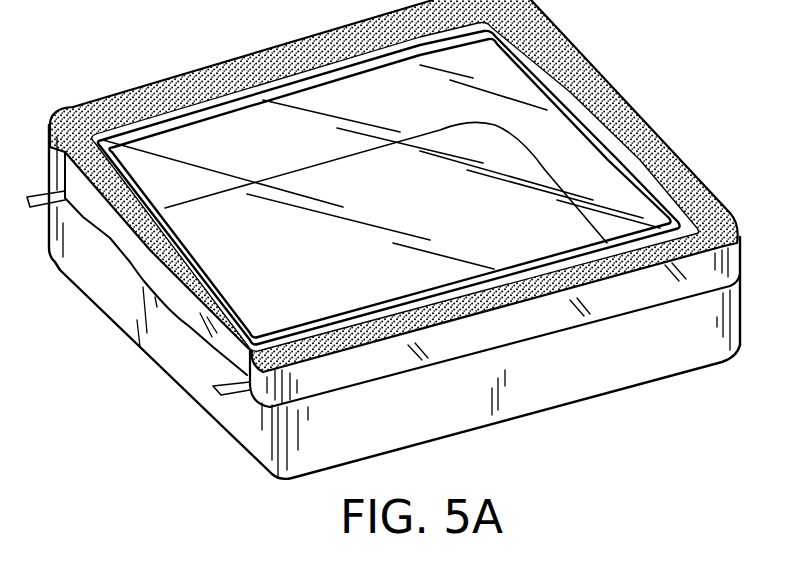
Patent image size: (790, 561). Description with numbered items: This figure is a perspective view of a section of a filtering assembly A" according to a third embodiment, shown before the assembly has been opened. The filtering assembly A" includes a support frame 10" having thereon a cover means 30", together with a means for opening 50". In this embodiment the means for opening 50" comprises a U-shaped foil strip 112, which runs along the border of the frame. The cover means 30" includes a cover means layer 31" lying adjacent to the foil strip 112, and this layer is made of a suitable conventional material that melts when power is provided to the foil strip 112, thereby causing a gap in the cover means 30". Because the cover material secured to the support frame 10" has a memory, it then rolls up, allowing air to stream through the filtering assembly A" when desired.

The support frame 10 is at (563, 370).
The filtering assembly A is at (286, 44).
The U-shaped foil strip 112 is at (187, 90).
The cover means 30 is at (497, 67).
The cover means layer 31 is at (598, 178).
The means for opening 50 is at (232, 397).